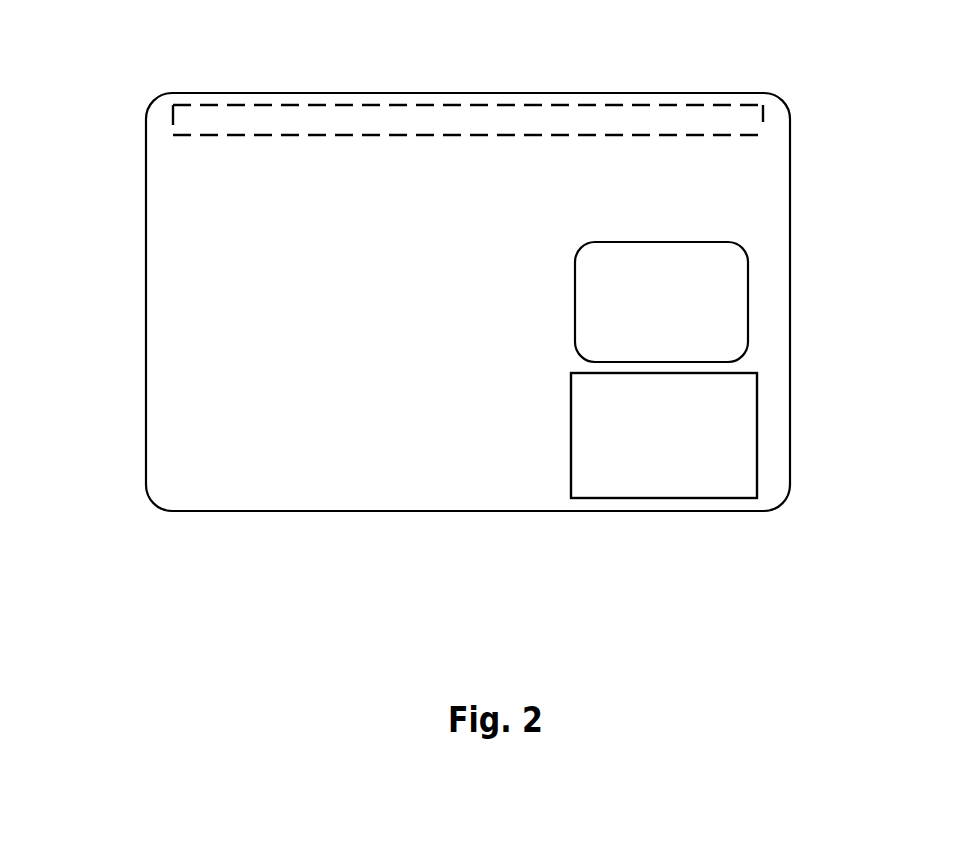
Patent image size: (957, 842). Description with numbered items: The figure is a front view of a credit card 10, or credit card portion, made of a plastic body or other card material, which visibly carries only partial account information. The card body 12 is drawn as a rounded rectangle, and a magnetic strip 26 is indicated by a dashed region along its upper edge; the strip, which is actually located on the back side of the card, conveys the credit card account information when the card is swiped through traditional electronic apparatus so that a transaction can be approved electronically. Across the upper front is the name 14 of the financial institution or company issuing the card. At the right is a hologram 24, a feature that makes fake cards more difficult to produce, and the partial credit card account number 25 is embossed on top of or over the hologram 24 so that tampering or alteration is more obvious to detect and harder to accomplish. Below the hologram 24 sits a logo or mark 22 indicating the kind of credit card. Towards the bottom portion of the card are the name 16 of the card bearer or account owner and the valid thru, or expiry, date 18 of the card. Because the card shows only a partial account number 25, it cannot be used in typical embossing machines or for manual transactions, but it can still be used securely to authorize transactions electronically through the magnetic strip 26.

The credit card 10 is at (750, 73).
The card body 12 is at (146, 243).
The name of the financial institution 14 is at (584, 178).
The name of the card bearer 16 is at (302, 478).
The expiration date 18 is at (497, 415).
The logos or marks 22 is at (740, 452).
The hologram 24 is at (723, 253).
The partial credit card account number 25 is at (718, 323).
The magnetic strip 26 is at (283, 97).